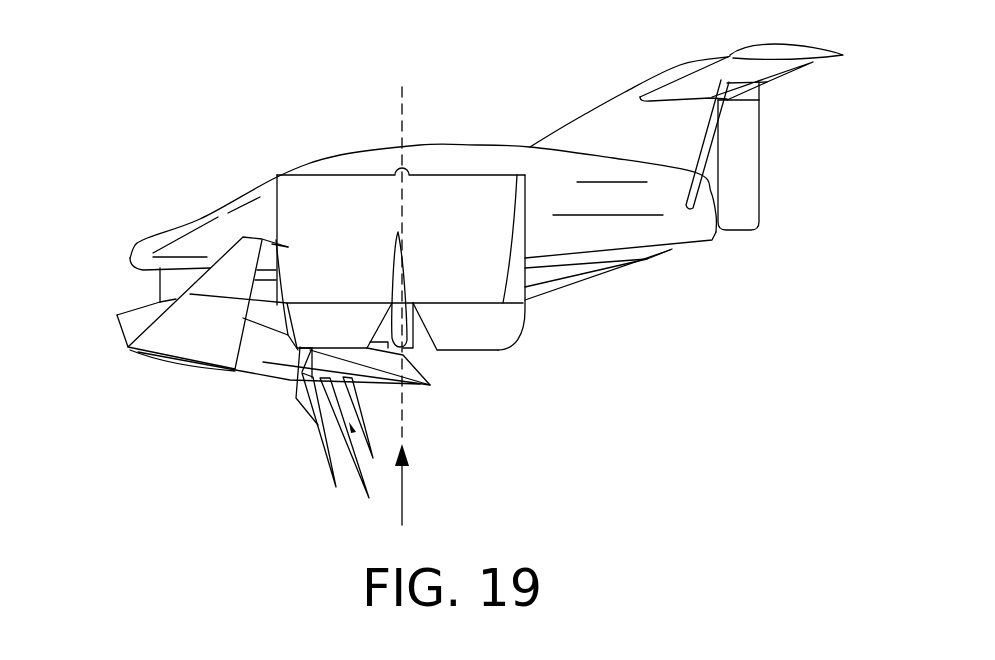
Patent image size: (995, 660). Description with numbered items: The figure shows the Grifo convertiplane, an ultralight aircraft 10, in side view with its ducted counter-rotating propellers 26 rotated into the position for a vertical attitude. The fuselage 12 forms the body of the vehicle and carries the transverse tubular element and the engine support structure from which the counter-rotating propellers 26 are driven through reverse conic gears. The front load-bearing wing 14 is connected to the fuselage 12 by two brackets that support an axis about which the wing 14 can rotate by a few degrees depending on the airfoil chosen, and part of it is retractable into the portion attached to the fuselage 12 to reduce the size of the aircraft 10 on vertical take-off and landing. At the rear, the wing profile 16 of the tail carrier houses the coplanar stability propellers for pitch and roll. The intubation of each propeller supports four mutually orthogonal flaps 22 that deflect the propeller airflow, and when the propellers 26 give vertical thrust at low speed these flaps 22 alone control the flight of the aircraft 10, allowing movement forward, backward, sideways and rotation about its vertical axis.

The aircraft 10 is at (210, 122).
The fuselage 12 is at (459, 153).
The front load-bearing wing 14 is at (142, 353).
The wing profile 16 is at (718, 70).
The flaps 22 is at (340, 438).
The ducted counter-rotating propellers 26 is at (494, 338).